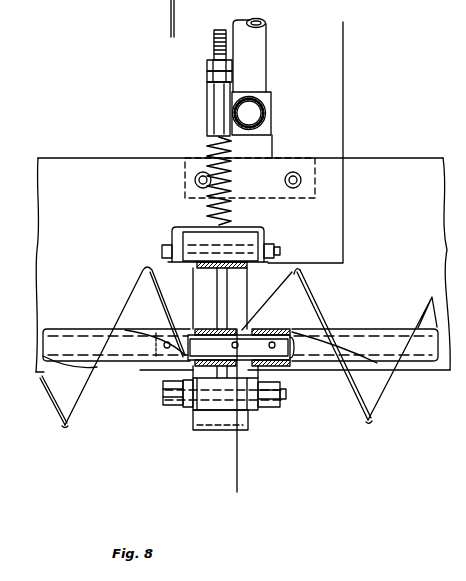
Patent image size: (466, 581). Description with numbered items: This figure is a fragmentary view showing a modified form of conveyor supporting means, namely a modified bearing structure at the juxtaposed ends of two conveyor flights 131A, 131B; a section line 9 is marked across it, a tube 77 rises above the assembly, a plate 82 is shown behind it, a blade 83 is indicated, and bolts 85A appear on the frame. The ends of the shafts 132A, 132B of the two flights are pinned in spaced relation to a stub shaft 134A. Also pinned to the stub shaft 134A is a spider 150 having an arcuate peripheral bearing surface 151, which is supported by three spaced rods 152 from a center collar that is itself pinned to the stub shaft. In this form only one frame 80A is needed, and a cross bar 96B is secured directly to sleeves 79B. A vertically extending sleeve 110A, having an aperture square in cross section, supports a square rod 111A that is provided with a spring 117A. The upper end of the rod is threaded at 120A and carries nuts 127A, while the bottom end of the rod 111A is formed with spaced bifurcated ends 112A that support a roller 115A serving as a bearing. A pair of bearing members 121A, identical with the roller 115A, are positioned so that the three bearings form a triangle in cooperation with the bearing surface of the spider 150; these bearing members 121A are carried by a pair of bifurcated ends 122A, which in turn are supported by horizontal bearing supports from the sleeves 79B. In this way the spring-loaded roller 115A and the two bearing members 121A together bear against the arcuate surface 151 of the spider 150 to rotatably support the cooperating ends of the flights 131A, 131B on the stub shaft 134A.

The section line 9- 9 is at (316, 33).
The tube 77 is at (257, 43).
The frame 80A is at (280, 90).
The sleeves 79B is at (272, 129).
The cross bar 96B is at (271, 101).
The mounting plate 82 is at (76, 170).
The blade 83 is at (112, 310).
The bolts 85A is at (315, 177).
The vertically extending sleeve 110A is at (208, 108).
The square rod 111A is at (210, 156).
The spring 117A is at (228, 171).
The threaded upper end 120A is at (212, 52).
The nuts 127A is at (208, 68).
The bifurcated ends 112A is at (168, 241).
The roller 115A is at (240, 243).
The spaced rods 152 is at (222, 294).
The shaft 132A is at (68, 331).
The shaft 132B is at (392, 329).
The stub shaft 134A is at (273, 333).
The flight 131A is at (61, 436).
The flight 131B is at (372, 435).
The bearing members 121A is at (254, 412).
The bifurcated ends 122A is at (176, 406).
The spider 150 is at (204, 437).
The arcuate peripheral bearing surface 151 is at (204, 417).